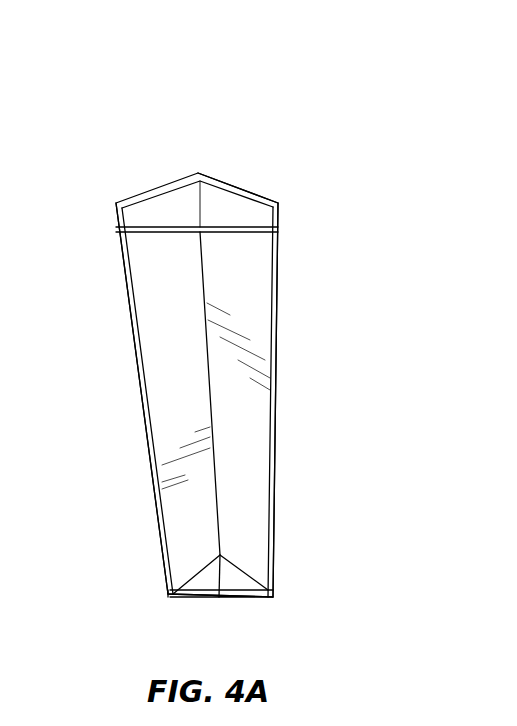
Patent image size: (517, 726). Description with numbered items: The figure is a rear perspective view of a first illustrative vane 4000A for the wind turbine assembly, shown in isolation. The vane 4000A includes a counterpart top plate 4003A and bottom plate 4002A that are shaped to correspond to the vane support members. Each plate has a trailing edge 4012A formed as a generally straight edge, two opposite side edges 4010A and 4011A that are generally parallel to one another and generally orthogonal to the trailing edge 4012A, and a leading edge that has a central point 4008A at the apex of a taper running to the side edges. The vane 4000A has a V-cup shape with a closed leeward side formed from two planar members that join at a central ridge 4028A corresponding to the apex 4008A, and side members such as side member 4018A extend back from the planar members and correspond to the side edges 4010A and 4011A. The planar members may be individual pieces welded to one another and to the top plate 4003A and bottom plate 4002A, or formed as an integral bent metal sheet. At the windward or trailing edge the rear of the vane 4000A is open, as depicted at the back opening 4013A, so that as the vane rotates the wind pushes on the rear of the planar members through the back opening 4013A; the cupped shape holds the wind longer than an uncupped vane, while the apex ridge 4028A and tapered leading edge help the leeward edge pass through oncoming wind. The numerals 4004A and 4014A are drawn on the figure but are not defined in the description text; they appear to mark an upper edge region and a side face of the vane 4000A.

The vane 4000A is at (115, 177).
The top plate 4003A is at (212, 210).
The top edge 4004A is at (266, 214).
The central ridge 4028A is at (200, 278).
The side member 4018A is at (168, 372).
The back opening 4013A is at (168, 434).
The second side face 4014A is at (256, 323).
The side edge 4011A is at (273, 588).
The bottom plate 4002A is at (252, 577).
The side edge 4010A is at (168, 593).
The trailing edge 4012A is at (185, 597).
The central point 4008A is at (219, 597).